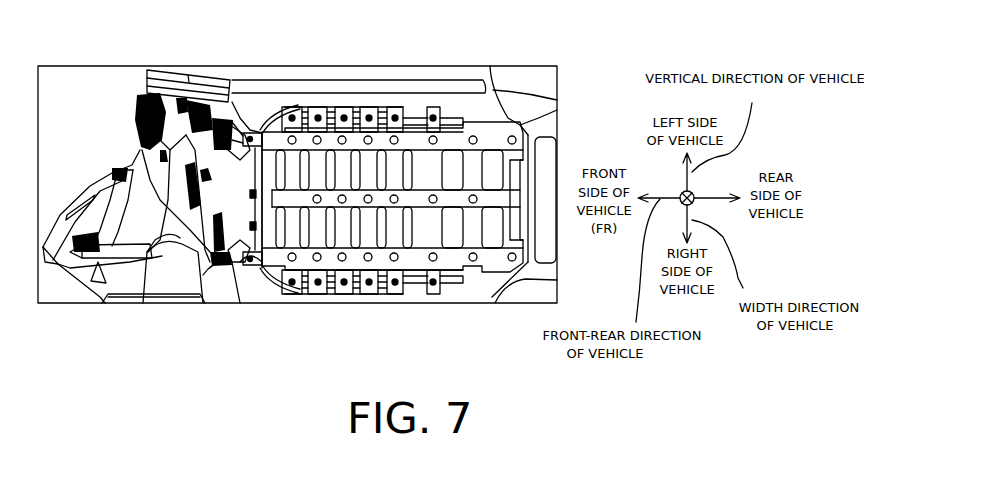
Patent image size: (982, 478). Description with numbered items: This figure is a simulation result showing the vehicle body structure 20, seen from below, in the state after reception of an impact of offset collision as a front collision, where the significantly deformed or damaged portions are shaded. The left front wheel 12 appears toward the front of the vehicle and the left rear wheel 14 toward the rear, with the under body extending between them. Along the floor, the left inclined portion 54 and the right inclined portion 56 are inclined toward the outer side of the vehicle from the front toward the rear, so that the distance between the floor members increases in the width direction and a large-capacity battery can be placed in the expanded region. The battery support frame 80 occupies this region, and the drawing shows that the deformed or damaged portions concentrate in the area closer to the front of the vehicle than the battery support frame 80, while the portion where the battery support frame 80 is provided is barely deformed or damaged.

The left front wheel 12 is at (200, 85).
The left rear wheel 14 is at (522, 77).
The vehicle body structure 20 is at (73, 305).
The left inclined portion 54 is at (297, 105).
The right inclined portion 56 is at (303, 305).
The battery support frame 80 is at (397, 100).